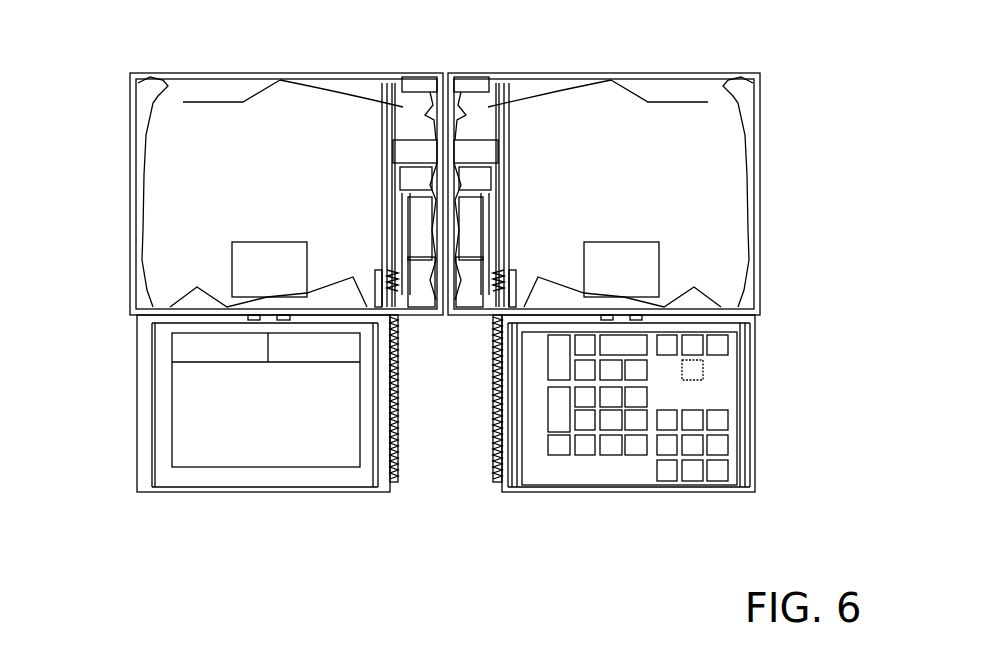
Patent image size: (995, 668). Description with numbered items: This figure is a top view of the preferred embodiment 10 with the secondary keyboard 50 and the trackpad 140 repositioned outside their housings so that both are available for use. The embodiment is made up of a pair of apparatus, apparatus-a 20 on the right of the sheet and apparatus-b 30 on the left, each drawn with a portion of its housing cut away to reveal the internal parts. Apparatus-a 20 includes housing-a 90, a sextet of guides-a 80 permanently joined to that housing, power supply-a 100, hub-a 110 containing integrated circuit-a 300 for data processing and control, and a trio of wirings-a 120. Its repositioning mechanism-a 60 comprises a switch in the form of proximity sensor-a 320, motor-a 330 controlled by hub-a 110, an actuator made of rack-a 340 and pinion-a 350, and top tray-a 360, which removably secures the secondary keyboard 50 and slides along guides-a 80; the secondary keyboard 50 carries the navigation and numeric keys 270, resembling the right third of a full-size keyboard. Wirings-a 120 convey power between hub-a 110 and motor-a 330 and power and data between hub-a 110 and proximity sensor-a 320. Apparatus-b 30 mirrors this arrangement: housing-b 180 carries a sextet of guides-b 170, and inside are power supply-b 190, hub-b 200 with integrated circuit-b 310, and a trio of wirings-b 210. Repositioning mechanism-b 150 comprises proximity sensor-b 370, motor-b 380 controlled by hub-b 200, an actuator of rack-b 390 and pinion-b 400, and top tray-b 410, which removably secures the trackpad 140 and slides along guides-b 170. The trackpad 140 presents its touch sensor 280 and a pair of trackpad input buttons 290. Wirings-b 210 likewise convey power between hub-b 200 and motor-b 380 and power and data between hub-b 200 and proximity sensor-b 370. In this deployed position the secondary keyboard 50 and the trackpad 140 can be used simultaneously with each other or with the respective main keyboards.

The preferred embodiment 10 is at (458, 578).
The apparatus-a 20 is at (636, 563).
The apparatus-b 30 is at (220, 577).
The secondary keyboard 50 is at (685, 395).
The repositioning mechanism-a 60 is at (497, 531).
The sextet of guides-a 80 is at (558, 90).
The housing-a 90 is at (757, 217).
The power supply-a 100 is at (478, 86).
The hub-a 110 is at (489, 148).
The trio of wirings-a 120 is at (483, 215).
The trackpad 140 is at (160, 468).
The repositioning mechanism-b 150 is at (398, 516).
The sextet of guides-b 170 is at (333, 90).
The housing-b 180 is at (138, 222).
The power supply-b 190 is at (403, 86).
The hub-b 200 is at (402, 148).
The trio of wirings-b 210 is at (408, 215).
The navigation and numeric keys 270 is at (690, 350).
The touch sensor 280 is at (202, 405).
The pair of trackpad input buttons 290 is at (267, 347).
The integrated circuit-a 300 is at (483, 178).
The integrated circuit-b 310 is at (408, 178).
The proximity sensor-a 320 is at (647, 253).
The motor-a 330 is at (478, 290).
The rack-a 340 is at (493, 460).
The pinion-a 350 is at (497, 403).
The top tray-a 360 is at (745, 345).
The proximity sensor-b 370 is at (240, 275).
The motor-b 380 is at (415, 290).
The rack-b 390 is at (397, 427).
The pinion-b 400 is at (381, 378).
The top tray-b 410 is at (158, 340).